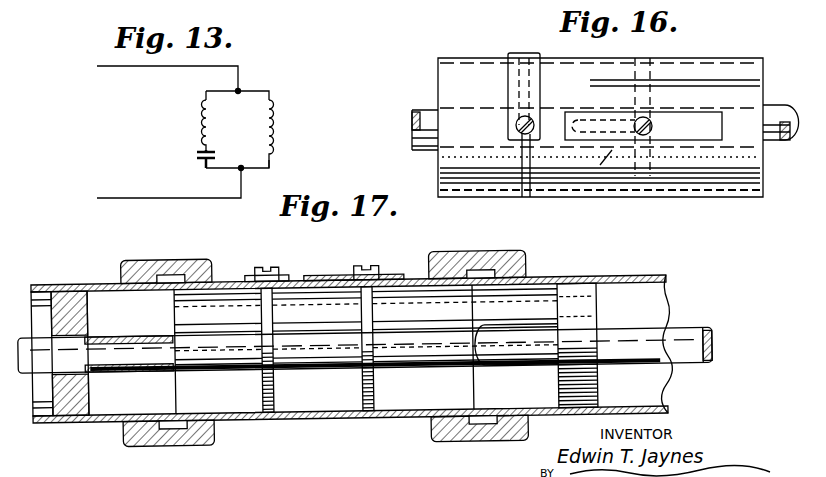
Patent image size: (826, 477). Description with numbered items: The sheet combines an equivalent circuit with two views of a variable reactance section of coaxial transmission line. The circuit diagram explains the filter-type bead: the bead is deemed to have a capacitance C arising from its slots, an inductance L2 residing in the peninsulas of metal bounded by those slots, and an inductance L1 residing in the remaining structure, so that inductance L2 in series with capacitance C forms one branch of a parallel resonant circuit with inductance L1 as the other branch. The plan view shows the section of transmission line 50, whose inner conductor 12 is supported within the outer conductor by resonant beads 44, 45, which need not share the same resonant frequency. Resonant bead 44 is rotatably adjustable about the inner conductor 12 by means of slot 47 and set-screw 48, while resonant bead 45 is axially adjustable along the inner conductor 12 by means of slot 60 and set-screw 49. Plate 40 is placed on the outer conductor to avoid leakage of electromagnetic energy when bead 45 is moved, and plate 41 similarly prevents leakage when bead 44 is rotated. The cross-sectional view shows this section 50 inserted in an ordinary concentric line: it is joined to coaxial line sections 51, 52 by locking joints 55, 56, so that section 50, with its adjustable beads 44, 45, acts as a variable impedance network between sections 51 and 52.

In FIG. 13, the inductance L1 is at (285, 134).
In FIG. 13, the inductance L2 is at (190, 125).
In FIG. 13, the capacitance C is at (198, 166).
In FIG. 16, the inner conductor 12 is at (771, 107).
In FIG. 17, the inner conductor 12 is at (219, 364).
In FIG. 16, the plate 40 is at (700, 135).
In FIG. 17, the plate 40 is at (348, 276).
In FIG. 16, the plate 41 is at (508, 55).
In FIG. 17, the plate 41 is at (250, 275).
In FIG. 17, the resonant bead 44 is at (262, 312).
In FIG. 17, the resonant bead 45 is at (376, 312).
In FIG. 16, the slot 47 is at (525, 198).
In FIG. 16, the set-screw 48 is at (515, 122).
In FIG. 17, the set-screw 48 is at (270, 266).
In FIG. 16, the set-screw 49 is at (647, 119).
In FIG. 17, the set-screw 49 is at (379, 273).
In FIG. 17, the section of transmission line 50 is at (334, 420).
In FIG. 17, the coaxial line section 51 is at (97, 421).
In FIG. 17, the coaxial line section 52 is at (668, 412).
In FIG. 17, the locking joint 55 is at (168, 441).
In FIG. 17, the locking joint 56 is at (470, 436).
In FIG. 16, the slot 60 is at (611, 160).